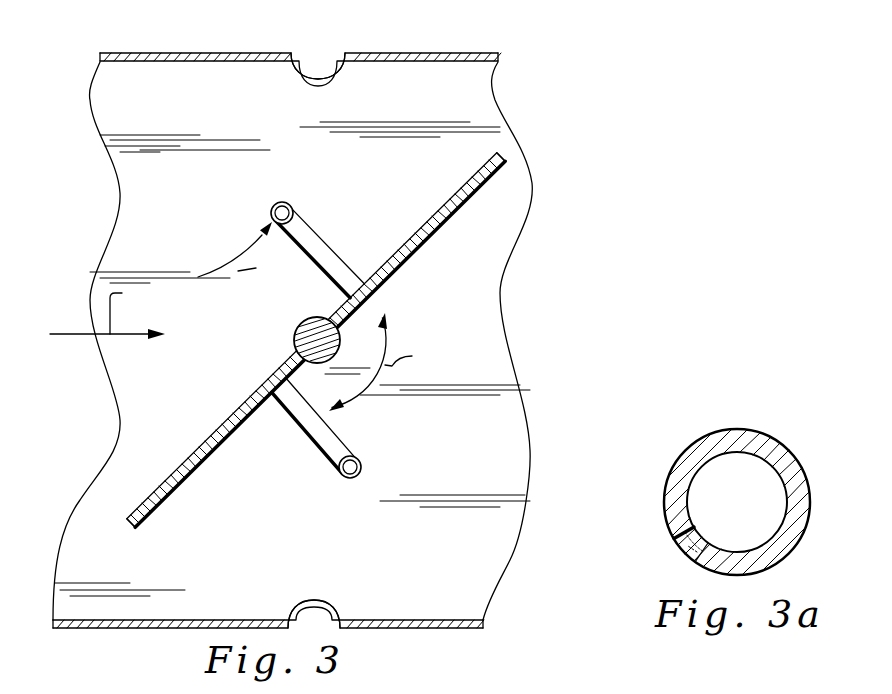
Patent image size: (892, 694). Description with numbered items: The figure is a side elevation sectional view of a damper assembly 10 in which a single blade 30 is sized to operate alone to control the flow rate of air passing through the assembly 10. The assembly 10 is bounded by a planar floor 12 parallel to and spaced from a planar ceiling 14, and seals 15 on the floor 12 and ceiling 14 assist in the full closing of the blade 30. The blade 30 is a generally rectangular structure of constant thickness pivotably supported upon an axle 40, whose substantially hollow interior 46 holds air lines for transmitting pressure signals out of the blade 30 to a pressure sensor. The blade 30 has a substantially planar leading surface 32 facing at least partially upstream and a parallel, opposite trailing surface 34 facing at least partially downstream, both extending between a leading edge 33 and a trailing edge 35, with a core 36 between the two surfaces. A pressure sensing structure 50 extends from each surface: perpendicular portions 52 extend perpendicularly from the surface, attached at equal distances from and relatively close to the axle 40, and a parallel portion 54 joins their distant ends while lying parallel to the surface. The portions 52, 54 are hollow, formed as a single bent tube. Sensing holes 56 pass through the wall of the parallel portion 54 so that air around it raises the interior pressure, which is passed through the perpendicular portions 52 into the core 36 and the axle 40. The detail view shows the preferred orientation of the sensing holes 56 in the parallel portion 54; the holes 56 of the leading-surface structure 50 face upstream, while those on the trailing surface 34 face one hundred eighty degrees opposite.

In FIG. 3, the damper assembly 10 is at (359, 320).
In FIG. 3, the planar floor 12 is at (160, 620).
In FIG. 3, the planar ceiling 14 is at (205, 62).
In FIG. 3, the seals 15 is at (300, 80).
In FIG. 3, the blade 30 is at (412, 78).
In FIG. 3, the leading surface 32 is at (200, 446).
In FIG. 3, the leading edge 33 is at (132, 530).
In FIG. 3, the trailing surface 34 is at (430, 237).
In FIG. 3, the trailing edge 35 is at (506, 160).
In FIG. 3, the core 36 is at (190, 473).
In FIG. 3, the axle 40 is at (293, 337).
In FIG. 3, the interior 46 is at (310, 332).
In FIG. 3, the sensing structure 50 is at (321, 347).
In FIG. 3, the perpendicular portions 52 is at (315, 242).
In FIG. 3, the parallel portion 54 is at (274, 205).
In FIG. 3A, the parallel portion 54 is at (751, 430).
In FIG. 3, the sensing holes 56 is at (271, 213).
In FIG. 3A, the sensing holes 56 is at (693, 548).